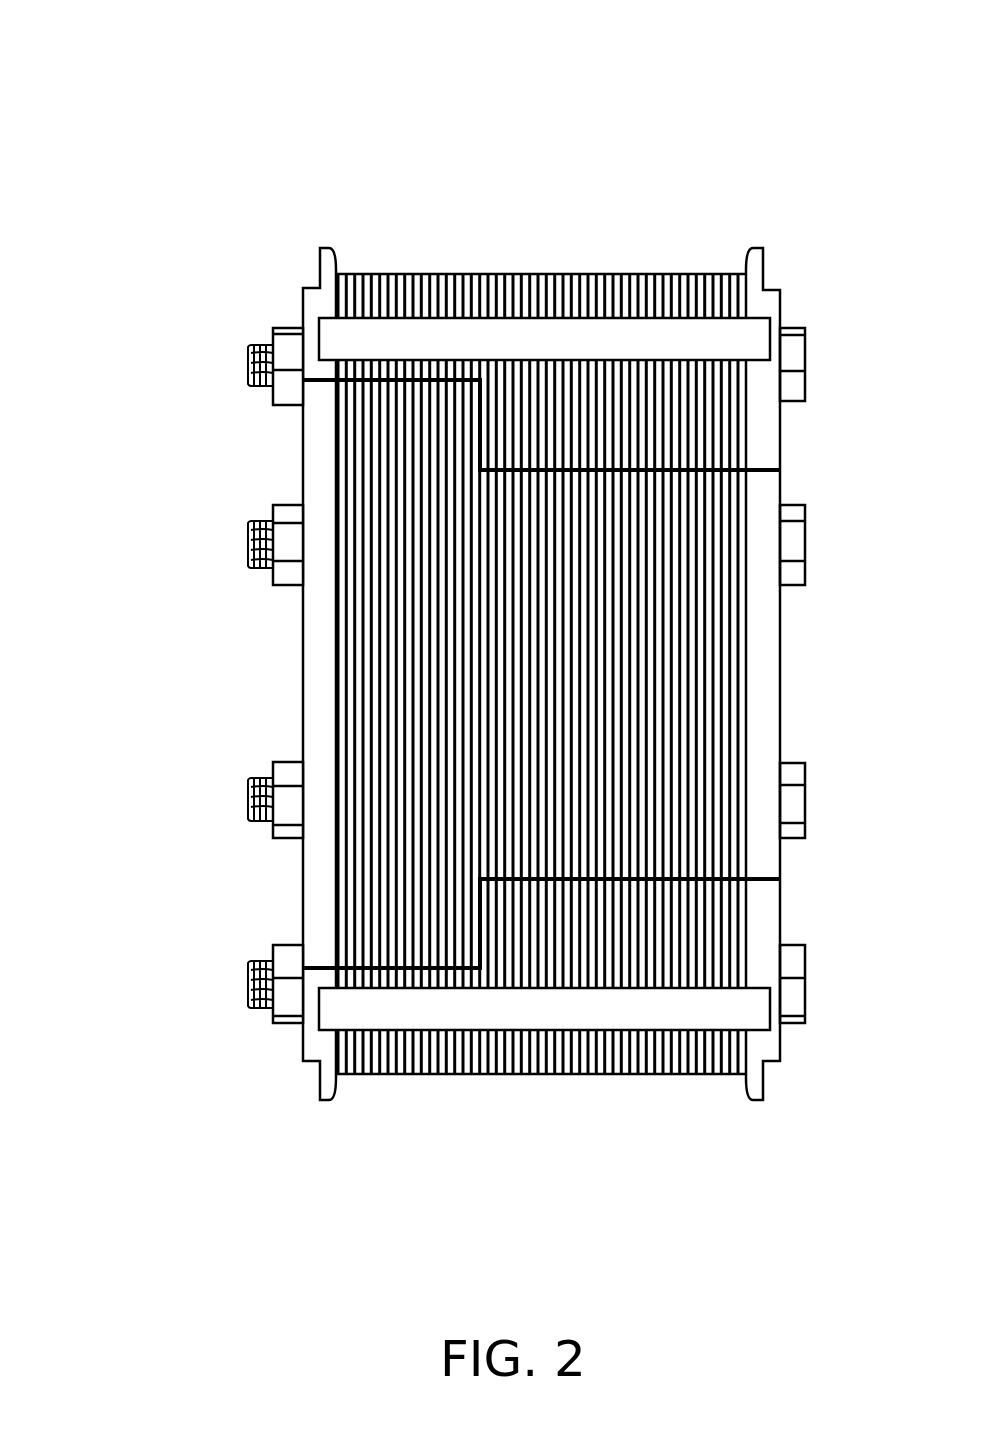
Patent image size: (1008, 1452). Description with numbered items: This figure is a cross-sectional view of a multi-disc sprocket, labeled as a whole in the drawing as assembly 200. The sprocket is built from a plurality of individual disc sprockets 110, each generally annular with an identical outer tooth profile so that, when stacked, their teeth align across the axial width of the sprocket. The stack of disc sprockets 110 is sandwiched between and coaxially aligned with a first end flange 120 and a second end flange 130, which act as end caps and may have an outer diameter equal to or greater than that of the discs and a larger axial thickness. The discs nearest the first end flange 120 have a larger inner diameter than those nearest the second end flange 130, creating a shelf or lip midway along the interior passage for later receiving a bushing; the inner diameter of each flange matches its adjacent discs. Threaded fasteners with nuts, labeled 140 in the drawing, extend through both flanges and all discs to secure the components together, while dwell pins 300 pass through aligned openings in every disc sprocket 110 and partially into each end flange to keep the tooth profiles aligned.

The electrolyzer stack assembly 200 is at (166, 46).
The disc sprocket 110 is at (380, 266).
The first end flange 120 is at (305, 290).
The second end flange 130 is at (762, 908).
The tie rods with nuts 140 is at (240, 527).
The dwell pin 300 is at (557, 332).